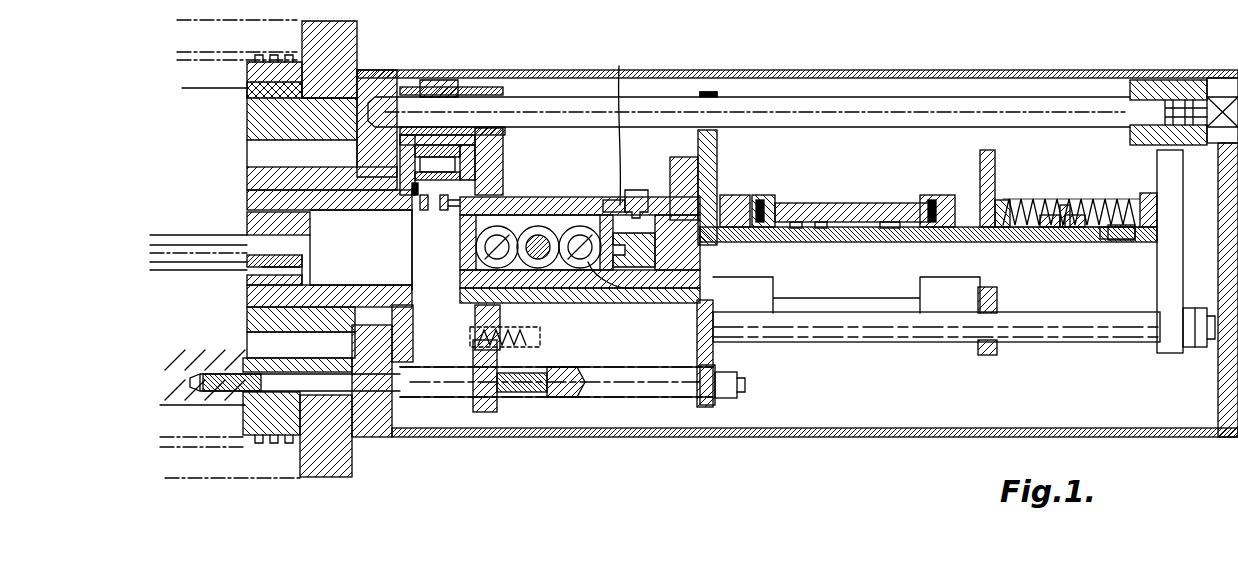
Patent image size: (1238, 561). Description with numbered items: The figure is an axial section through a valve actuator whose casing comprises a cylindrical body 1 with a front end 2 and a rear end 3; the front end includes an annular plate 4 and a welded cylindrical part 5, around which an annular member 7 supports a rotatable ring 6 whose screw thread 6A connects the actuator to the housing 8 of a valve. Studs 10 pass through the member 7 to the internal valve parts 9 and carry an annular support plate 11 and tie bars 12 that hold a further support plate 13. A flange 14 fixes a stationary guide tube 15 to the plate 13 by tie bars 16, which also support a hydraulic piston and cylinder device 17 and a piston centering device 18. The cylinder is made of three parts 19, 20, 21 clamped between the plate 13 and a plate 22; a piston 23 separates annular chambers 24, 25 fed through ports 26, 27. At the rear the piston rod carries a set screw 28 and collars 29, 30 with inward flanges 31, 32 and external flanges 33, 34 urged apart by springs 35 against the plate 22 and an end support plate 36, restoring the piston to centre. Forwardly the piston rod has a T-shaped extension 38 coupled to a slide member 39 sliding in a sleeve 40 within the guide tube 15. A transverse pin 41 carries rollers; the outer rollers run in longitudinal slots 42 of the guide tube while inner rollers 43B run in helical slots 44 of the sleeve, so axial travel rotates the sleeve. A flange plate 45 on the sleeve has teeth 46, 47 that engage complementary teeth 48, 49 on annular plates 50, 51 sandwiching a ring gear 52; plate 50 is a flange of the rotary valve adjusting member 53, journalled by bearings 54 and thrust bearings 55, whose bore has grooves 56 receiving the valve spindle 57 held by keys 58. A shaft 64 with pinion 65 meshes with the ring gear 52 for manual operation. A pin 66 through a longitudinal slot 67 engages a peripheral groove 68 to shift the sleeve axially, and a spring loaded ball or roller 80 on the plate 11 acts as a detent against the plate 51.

The cylindrical body 1 is at (768, 72).
The front end 2 is at (386, 69).
The rear end 3 is at (1222, 375).
The annular plate 4 is at (378, 410).
The cylindrical part 5 is at (246, 180).
The ring 6 is at (330, 462).
The screw thread 6A is at (272, 455).
The annular member 7 is at (246, 125).
The housing 8 is at (215, 455).
The internal valve parts 9 is at (188, 405).
The studs 10 is at (345, 388).
The annular support plate 11 is at (487, 412).
The tie bars 12 is at (633, 390).
The support plate 13 is at (708, 405).
The flange 14 is at (715, 355).
The stationary guide tube 15 is at (540, 318).
The tie bars 16 is at (820, 330).
The hydraulic piston and cylinder device 17 is at (835, 189).
The piston centering device 18 is at (1055, 185).
The cylinder end part 19 is at (735, 195).
The cylinder part 20 is at (820, 230).
The cylinder end part 21 is at (983, 195).
The plate 22 is at (986, 356).
The piston 23 is at (850, 203).
The annular chamber 24 is at (796, 230).
The annular chamber 25 is at (890, 230).
The port 26 is at (762, 198).
The port 27 is at (935, 195).
The set screw 28 is at (1150, 242).
The collar 29 is at (1040, 235).
The collar 30 is at (1125, 196).
The inwardly directed flange 31 is at (1070, 235).
The inwardly directed flange 32 is at (1110, 242).
The external flange 33 is at (1002, 230).
The external flange 34 is at (1170, 215).
The springs 35 is at (1088, 200).
The end support plate 36 is at (1165, 288).
The extension 38 is at (636, 290).
The slide member 39 is at (598, 252).
The sleeve 40 is at (588, 198).
The transverse pin 41 is at (497, 258).
The longitudinal slots 42 is at (582, 258).
The inner rollers 43B is at (540, 258).
The helical slots 44 is at (470, 274).
The flange plate 45 is at (444, 212).
The driving teeth 46 is at (414, 215).
The driving teeth 47 is at (505, 185).
The complementary teeth 48 is at (420, 205).
The complementary teeth 49 is at (513, 159).
The annular plate 50 is at (408, 225).
The annular plate 51 is at (462, 150).
The ring gear 52 is at (440, 130).
The rotary valve adjusting member 53 is at (248, 203).
The bearings 54 is at (305, 167).
The thrust bearings 55 is at (350, 167).
The longitudinal grooves 56 is at (340, 215).
The valve spindle 57 is at (190, 255).
The keys 58 is at (255, 285).
The shaft 64 is at (820, 122).
The pinion 65 is at (440, 82).
The pin 66 is at (617, 122).
The longitudinal slot 67 is at (642, 190).
The peripheral groove 68 is at (690, 268).
The spring loaded ball or roller 80 is at (465, 362).